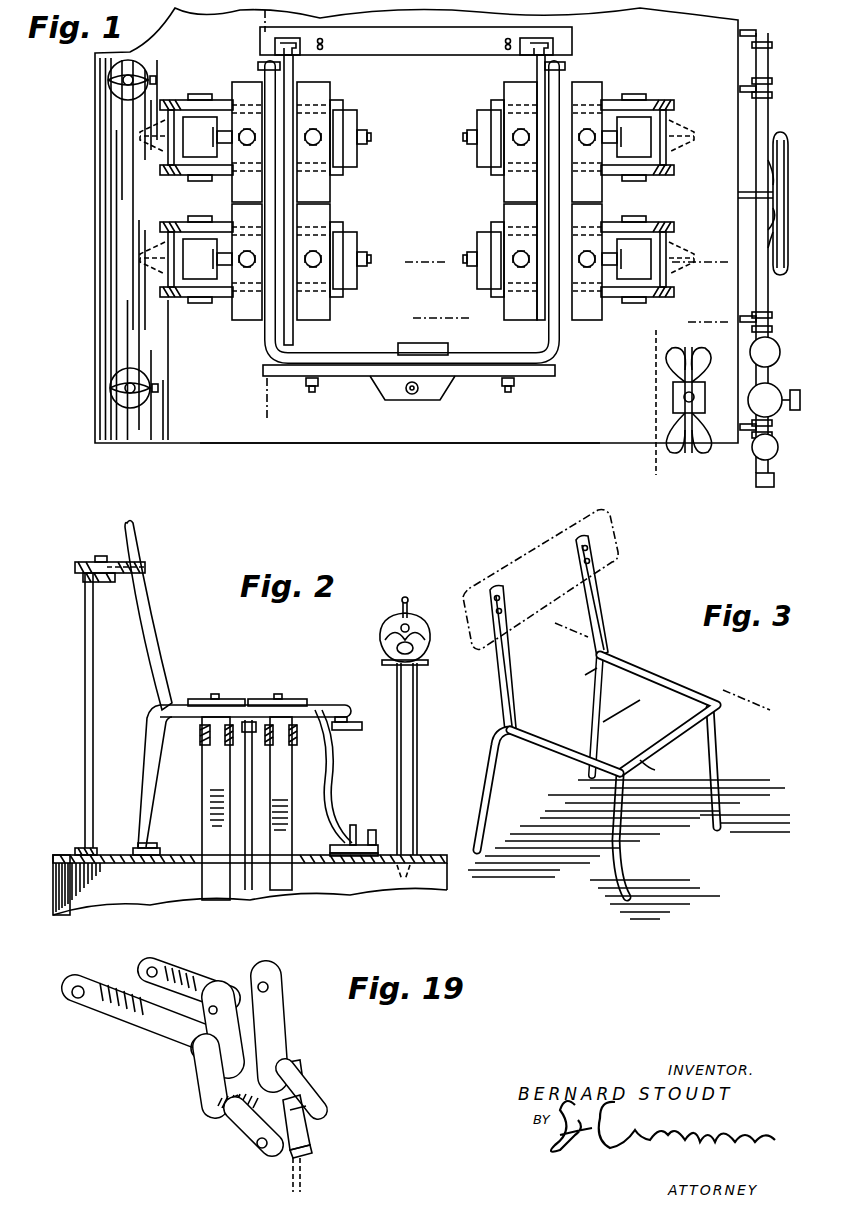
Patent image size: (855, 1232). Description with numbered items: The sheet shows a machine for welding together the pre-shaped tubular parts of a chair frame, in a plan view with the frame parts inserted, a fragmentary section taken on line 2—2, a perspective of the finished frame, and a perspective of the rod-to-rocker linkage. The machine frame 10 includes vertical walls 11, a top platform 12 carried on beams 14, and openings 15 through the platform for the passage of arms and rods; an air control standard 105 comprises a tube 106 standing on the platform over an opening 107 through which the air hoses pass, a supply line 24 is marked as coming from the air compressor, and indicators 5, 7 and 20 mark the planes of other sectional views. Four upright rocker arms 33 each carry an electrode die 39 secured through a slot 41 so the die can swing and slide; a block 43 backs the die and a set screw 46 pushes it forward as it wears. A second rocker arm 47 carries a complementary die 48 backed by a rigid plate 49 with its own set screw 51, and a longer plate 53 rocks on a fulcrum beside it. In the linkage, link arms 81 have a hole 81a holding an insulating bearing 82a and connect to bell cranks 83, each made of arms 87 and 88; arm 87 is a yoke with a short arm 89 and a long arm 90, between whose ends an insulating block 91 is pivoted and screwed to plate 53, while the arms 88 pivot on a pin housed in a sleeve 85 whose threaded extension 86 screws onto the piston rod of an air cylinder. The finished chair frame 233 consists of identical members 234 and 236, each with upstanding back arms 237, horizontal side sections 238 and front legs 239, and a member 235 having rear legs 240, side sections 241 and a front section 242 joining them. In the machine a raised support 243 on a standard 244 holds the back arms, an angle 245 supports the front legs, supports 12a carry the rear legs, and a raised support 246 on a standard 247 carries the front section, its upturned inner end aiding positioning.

In FIG. 1, the frame of the machine 10 is at (488, 455).
In FIG. 2, the frame of the machine 10 is at (58, 845).
In FIG. 2, the vertical supports or walls 11 is at (30, 915).
In FIG. 1, the platform 12 is at (305, 440).
In FIG. 2, the platform 12 is at (115, 855).
In FIG. 1, the supports 12a is at (258, 65).
In FIG. 2, the supports 12a is at (150, 845).
In FIG. 2, the openings 15 is at (300, 865).
In FIG. 1, the section line 20- 20 is at (655, 338).
In FIG. 1, the air supply pipe 24 is at (780, 150).
In FIG. 1, the section line 2— 2 is at (262, 18).
In FIG. 1, the section line 5- 5 is at (418, 266).
In FIG. 1, the section line 7- 7 is at (418, 322).
In FIG. 3, the beams 14 is at (562, 620).
In FIG. 1, the rocker arm 33 is at (350, 170).
In FIG. 1, the electrode die 39 is at (330, 90).
In FIG. 1, the slot 41 is at (322, 137).
In FIG. 1, the block 43 is at (360, 150).
In FIG. 1, the set screw 46 is at (371, 137).
In FIG. 1, the second rocker arm 47 is at (245, 110).
In FIG. 1, the complementary die 48 is at (240, 188).
In FIG. 1, the rigid plate 49 is at (606, 150).
In FIG. 1, the set screw 51 is at (417, 258).
In FIG. 1, the second rigid plate or arm 53 is at (415, 197).
In FIG. 1, the link arms 81 is at (343, 105).
In FIG. 19, the link arms 81 is at (193, 960).
In FIG. 19, the hole 81a is at (200, 1058).
In FIG. 19, the bearing 82a is at (195, 1047).
In FIG. 19, the bell cranks 83 is at (205, 1125).
In FIG. 19, the sleeve 85 is at (308, 1120).
In FIG. 19, the internally threaded extension 86 is at (305, 1142).
In FIG. 19, the bell crank arm 87 is at (188, 1102).
In FIG. 19, the bell crank arm 88 is at (245, 1140).
In FIG. 1, the short arm 89 is at (195, 215).
In FIG. 19, the short arm 89 is at (190, 1090).
In FIG. 1, the long arm 90 is at (195, 160).
In FIG. 19, the long arm 90 is at (222, 985).
In FIG. 1, the block of insulating material 91 is at (190, 122).
In FIG. 1, the air control standard 105 is at (668, 402).
In FIG. 2, the air control standard 105 is at (370, 628).
In FIG. 2, the tube 106 is at (418, 760).
In FIG. 3, the tube 106 is at (430, 748).
In FIG. 2, the opening 107 is at (408, 882).
In FIG. 3, the tubular chair frame 233 is at (630, 642).
In FIG. 3, the frame member 234 is at (585, 642).
In FIG. 3, the frame member 235 is at (550, 768).
In FIG. 3, the frame member 236 is at (598, 600).
In FIG. 1, the upstanding back arms 237 is at (312, 18).
In FIG. 2, the upstanding back arms 237 is at (148, 600).
In FIG. 3, the upstanding back arms 237 is at (518, 693).
In FIG. 1, the horizontal intermediate side sections 238 is at (537, 244).
In FIG. 3, the horizontal intermediate side sections 238 is at (582, 735).
In FIG. 2, the front legs 239 is at (335, 839).
In FIG. 3, the front legs 239 is at (720, 760).
In FIG. 2, the rear legs 240 is at (155, 775).
In FIG. 3, the rear legs 240 is at (485, 812).
In FIG. 1, the horizontal side sections 241 is at (268, 322).
In FIG. 2, the horizontal side sections 241 is at (235, 710).
In FIG. 3, the horizontal side sections 241 is at (662, 705).
In FIG. 1, the front frame section 242 is at (337, 377).
In FIG. 2, the front frame section 242 is at (342, 710).
In FIG. 3, the front frame section 242 is at (664, 769).
In FIG. 1, the raised horizontal support 243 is at (406, 50).
In FIG. 2, the raised horizontal support 243 is at (120, 568).
In FIG. 2, the standard 244 is at (93, 690).
In FIG. 1, the angle 245 is at (318, 386).
In FIG. 2, the angle 245 is at (337, 863).
In FIG. 1, the raised horizontal support 246 is at (428, 396).
In FIG. 2, the raised horizontal support 246 is at (352, 722).
In FIG. 1, the standard 247 is at (403, 348).
In FIG. 2, the standard 247 is at (318, 710).